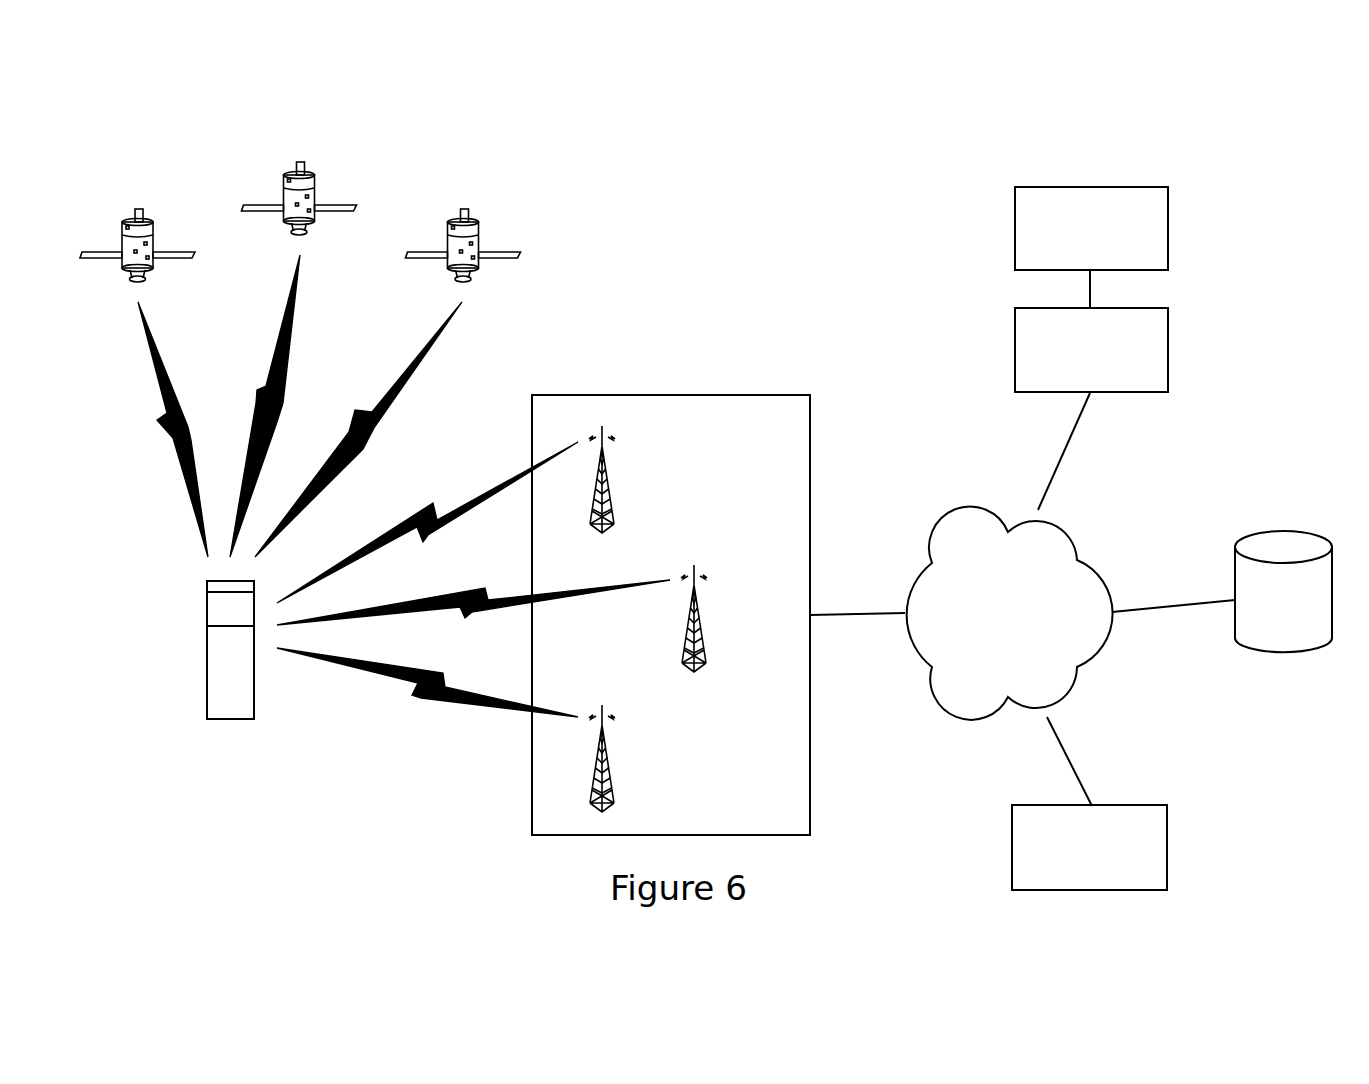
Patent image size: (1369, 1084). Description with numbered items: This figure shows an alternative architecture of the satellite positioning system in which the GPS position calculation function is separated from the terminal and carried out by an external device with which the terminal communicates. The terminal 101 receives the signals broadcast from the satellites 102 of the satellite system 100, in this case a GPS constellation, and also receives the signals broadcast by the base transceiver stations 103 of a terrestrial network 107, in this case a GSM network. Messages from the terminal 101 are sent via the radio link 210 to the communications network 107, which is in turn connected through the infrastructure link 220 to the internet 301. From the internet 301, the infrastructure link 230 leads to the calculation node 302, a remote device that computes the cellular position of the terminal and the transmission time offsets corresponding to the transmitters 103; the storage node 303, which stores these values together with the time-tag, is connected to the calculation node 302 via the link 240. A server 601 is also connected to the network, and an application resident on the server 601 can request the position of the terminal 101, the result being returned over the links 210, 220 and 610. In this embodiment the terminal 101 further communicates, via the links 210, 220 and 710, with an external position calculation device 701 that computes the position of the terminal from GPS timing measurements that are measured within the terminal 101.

The satellite system 100 is at (402, 193).
The terminal 101 is at (231, 695).
The satellites 102 is at (152, 223).
The base transceiver stations 103 is at (610, 487).
The terrestrial network 107 is at (745, 423).
The radio link 210 is at (473, 579).
The infrastructure link 220 is at (857, 636).
The infrastructure link 230 is at (1087, 451).
The link 240 is at (1085, 293).
The internet 301 is at (972, 557).
The calculation node 302 is at (1091, 350).
The storage node 303 is at (1091, 228).
The server 601 is at (1089, 847).
The communication link 610 is at (1098, 761).
The position calculation device 701 is at (1283, 591).
The link 710 is at (1173, 587).